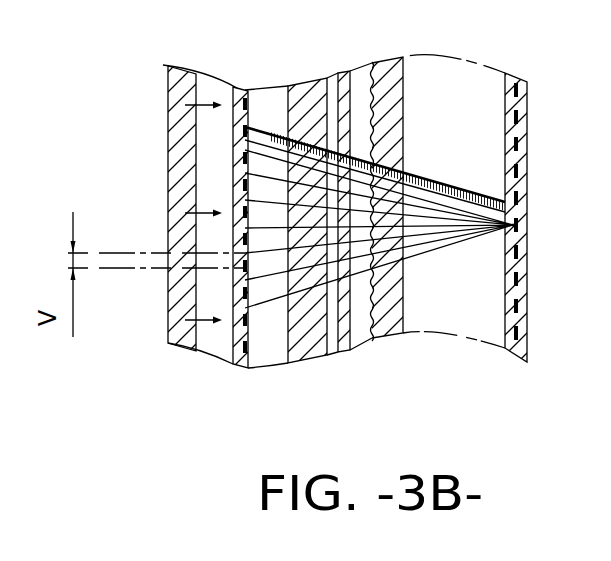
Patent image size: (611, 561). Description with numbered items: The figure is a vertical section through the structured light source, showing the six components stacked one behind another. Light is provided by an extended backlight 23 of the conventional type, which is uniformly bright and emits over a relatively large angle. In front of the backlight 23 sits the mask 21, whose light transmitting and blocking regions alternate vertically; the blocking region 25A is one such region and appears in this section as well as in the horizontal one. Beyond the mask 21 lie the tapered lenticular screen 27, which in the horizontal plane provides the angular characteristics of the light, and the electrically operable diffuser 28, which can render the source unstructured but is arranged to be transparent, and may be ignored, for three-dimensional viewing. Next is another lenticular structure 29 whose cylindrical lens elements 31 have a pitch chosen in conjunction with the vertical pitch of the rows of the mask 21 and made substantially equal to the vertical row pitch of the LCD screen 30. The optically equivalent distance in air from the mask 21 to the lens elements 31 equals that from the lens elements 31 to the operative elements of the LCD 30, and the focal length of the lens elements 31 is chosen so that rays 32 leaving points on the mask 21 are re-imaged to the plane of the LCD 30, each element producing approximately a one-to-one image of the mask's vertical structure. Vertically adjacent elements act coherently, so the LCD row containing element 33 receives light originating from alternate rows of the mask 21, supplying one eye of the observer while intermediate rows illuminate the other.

The mask 21 is at (237, 366).
The backlight 23 is at (178, 305).
The blocking region 25A is at (243, 191).
The tapered lenticular screen 27 is at (305, 348).
The electrically operable diffuser 28 is at (345, 78).
The lenticular structure 29 is at (387, 325).
The LCD screen 30 is at (519, 309).
The lens elements 31 is at (375, 118).
The rays 32 is at (271, 142).
The LCD element 33 is at (517, 225).